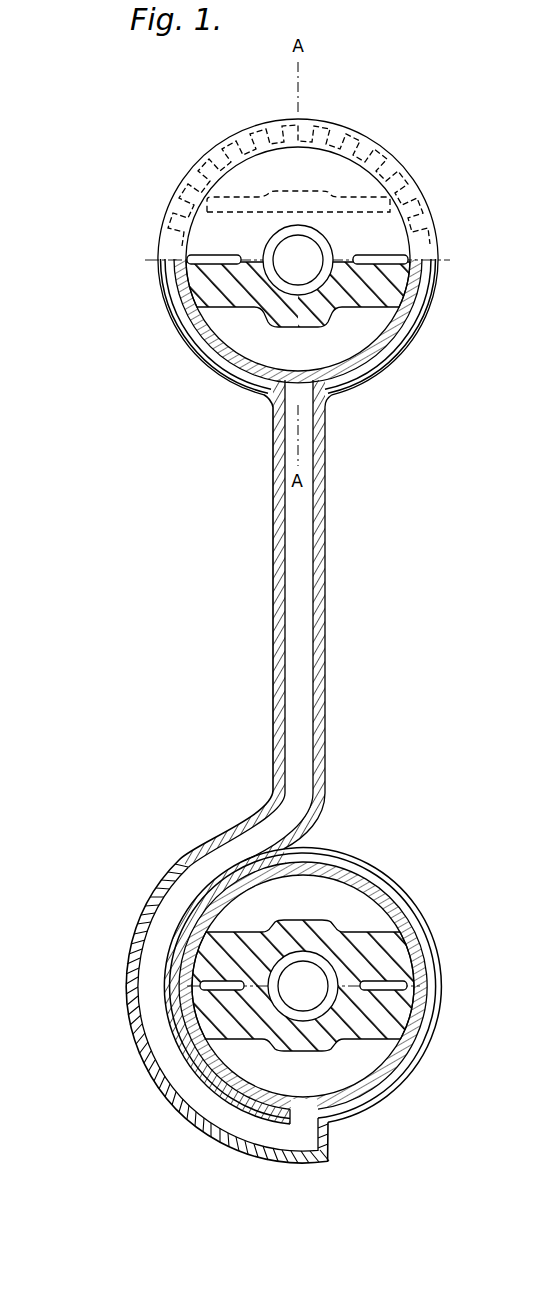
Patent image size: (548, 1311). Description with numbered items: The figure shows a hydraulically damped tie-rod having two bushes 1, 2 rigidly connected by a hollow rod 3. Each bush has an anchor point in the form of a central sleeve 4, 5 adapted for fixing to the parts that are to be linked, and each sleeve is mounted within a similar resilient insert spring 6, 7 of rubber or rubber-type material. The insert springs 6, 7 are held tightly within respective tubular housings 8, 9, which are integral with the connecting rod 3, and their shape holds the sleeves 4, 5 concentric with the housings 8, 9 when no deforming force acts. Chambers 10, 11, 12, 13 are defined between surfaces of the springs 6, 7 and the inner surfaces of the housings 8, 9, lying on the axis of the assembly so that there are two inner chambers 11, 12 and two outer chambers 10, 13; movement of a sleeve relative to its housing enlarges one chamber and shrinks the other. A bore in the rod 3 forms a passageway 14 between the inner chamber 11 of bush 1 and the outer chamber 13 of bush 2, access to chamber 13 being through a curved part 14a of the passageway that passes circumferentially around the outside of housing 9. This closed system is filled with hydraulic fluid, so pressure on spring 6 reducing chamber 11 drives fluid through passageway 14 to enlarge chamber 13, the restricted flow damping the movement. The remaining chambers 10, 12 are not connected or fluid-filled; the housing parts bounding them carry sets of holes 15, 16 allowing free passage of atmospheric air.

The bush 1 is at (148, 242).
The bush 2 is at (112, 1000).
The hollow rod 3 is at (277, 588).
The central sleeve 4 is at (322, 238).
The central sleeve 5 is at (330, 998).
The resilient insert spring 6 is at (393, 229).
The resilient insert spring 7 is at (393, 952).
The tubular housing 8 is at (423, 310).
The tubular housing 9 is at (393, 1088).
The outer chamber 10 is at (288, 176).
The inner chamber 11 is at (288, 352).
The inner chamber 12 is at (293, 903).
The outer chamber 13 is at (293, 1077).
The passageway 14 is at (303, 632).
The curved part of the passageway 14a is at (147, 951).
The set of holes 15 is at (333, 130).
The set of holes 16 is at (353, 870).